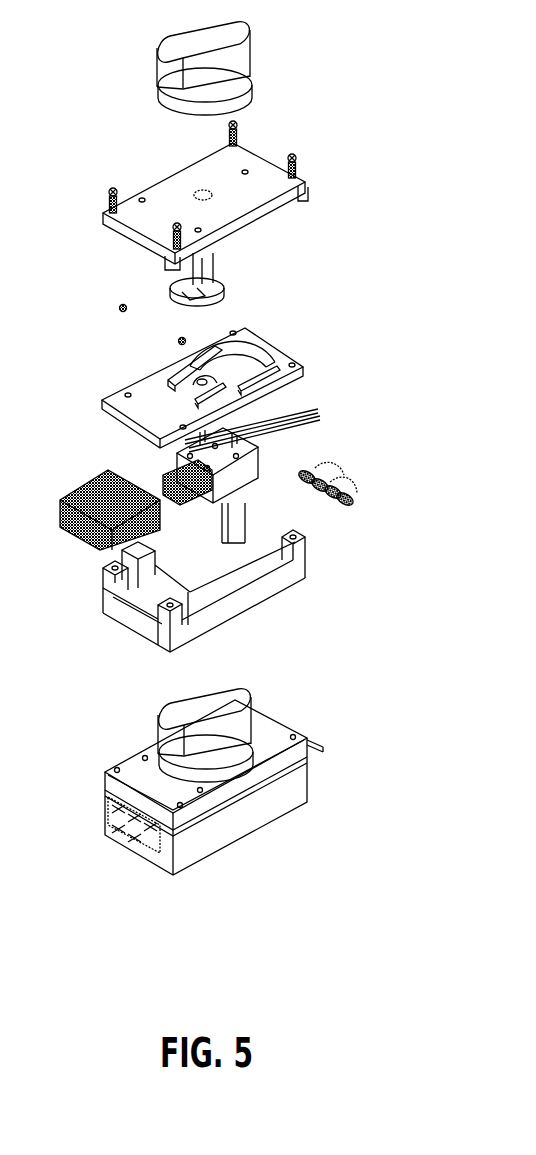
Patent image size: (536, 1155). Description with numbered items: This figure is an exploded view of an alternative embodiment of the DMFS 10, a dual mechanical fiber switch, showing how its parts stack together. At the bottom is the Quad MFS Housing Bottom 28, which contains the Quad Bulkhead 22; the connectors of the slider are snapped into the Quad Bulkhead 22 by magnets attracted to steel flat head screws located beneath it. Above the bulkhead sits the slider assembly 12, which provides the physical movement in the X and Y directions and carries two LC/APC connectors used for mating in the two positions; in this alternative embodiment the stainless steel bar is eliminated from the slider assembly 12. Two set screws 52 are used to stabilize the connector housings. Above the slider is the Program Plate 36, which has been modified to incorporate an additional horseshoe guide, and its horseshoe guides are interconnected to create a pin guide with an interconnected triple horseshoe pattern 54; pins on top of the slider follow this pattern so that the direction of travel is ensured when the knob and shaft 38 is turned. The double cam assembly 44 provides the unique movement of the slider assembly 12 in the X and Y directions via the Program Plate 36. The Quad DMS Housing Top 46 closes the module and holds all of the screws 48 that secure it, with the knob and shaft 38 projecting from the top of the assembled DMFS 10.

The DMFS 10 is at (349, 802).
The slider assembly 12 is at (225, 443).
The Quad Bulkhead 22 is at (150, 528).
The Quad MFS Housing Bottom 28 is at (195, 567).
The Program Plate 36 is at (225, 360).
The knob and shaft 38 is at (215, 65).
The double cam assembly 44 is at (202, 275).
The Quad DMS Housing Top 46 is at (223, 192).
The screws 48 is at (297, 160).
The set screws 52 is at (127, 308).
The interconnected triple horseshoe pattern 54 is at (173, 383).